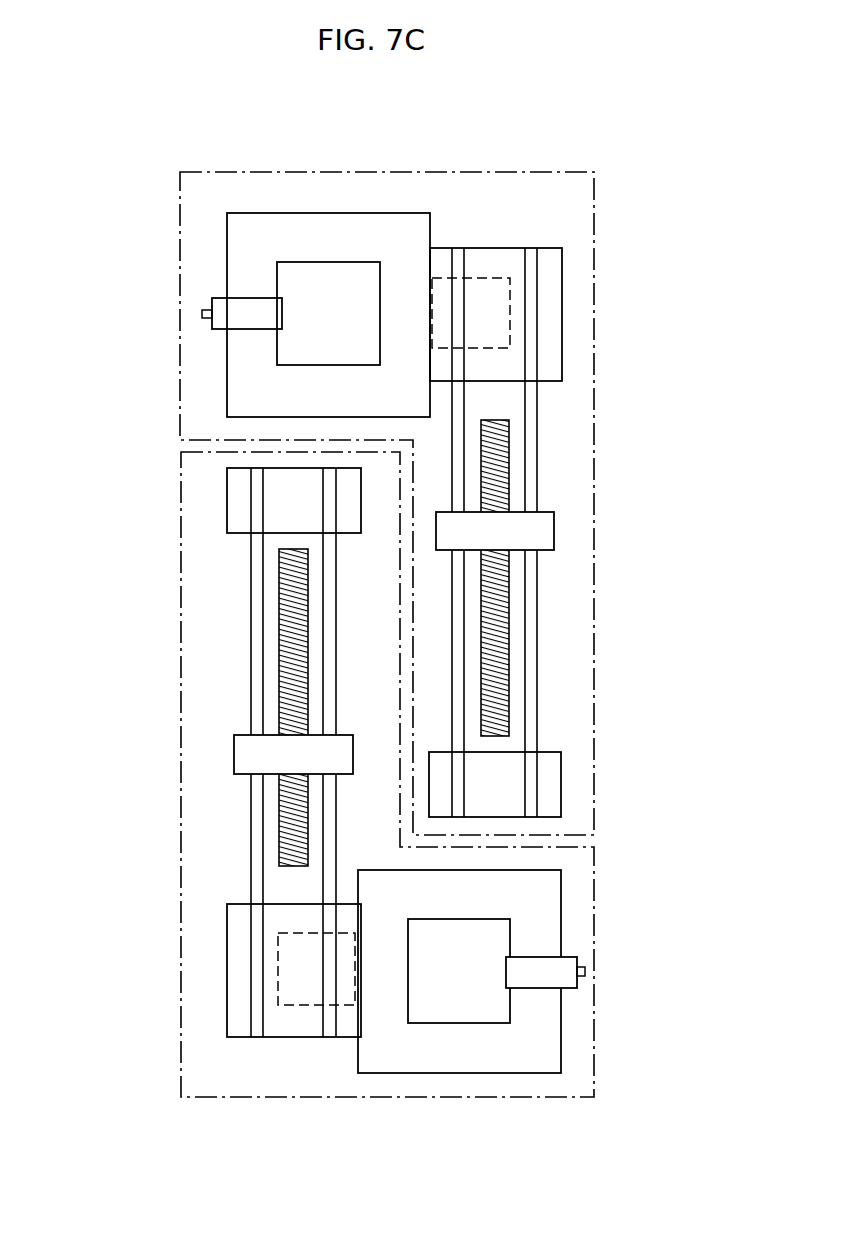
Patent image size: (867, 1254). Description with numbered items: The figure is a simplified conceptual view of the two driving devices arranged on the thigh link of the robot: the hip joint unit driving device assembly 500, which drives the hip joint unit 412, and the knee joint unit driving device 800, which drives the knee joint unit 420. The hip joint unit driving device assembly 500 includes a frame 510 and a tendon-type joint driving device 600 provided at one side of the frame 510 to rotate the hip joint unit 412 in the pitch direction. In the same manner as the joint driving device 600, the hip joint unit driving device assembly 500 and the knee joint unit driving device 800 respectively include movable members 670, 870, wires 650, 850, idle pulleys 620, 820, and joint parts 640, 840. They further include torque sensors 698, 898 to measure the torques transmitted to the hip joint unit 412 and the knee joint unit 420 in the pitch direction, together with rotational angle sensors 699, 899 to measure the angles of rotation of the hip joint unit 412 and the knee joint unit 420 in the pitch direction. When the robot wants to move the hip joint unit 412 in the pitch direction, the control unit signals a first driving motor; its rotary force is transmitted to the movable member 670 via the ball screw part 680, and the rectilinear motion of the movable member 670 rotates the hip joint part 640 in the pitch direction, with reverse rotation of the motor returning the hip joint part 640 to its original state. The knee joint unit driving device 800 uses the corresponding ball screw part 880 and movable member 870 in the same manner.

The hip joint unit driving device assembly 500 is at (610, 212).
The hip joint unit 412 is at (158, 312).
The frame 510 is at (237, 243).
The rotational angle sensor 699 is at (221, 327).
The tendon-type joint driving device 600 is at (566, 556).
The wire 650 is at (532, 437).
The hip joint part 640 is at (507, 362).
The torque sensor 698 is at (480, 277).
The ball screw part 680 is at (510, 477).
The movable member 670 is at (543, 529).
The idle pulley 620 is at (547, 777).
The knee joint unit driving device 800 is at (158, 1066).
The wire 850 is at (254, 585).
The idle pulley 820 is at (235, 503).
The ball screw part 880 is at (282, 655).
The movable member 870 is at (252, 755).
The joint part 840 is at (237, 915).
The torque sensor 898 is at (305, 1005).
The knee joint unit 420 is at (612, 930).
The rotational angle sensor 899 is at (570, 982).